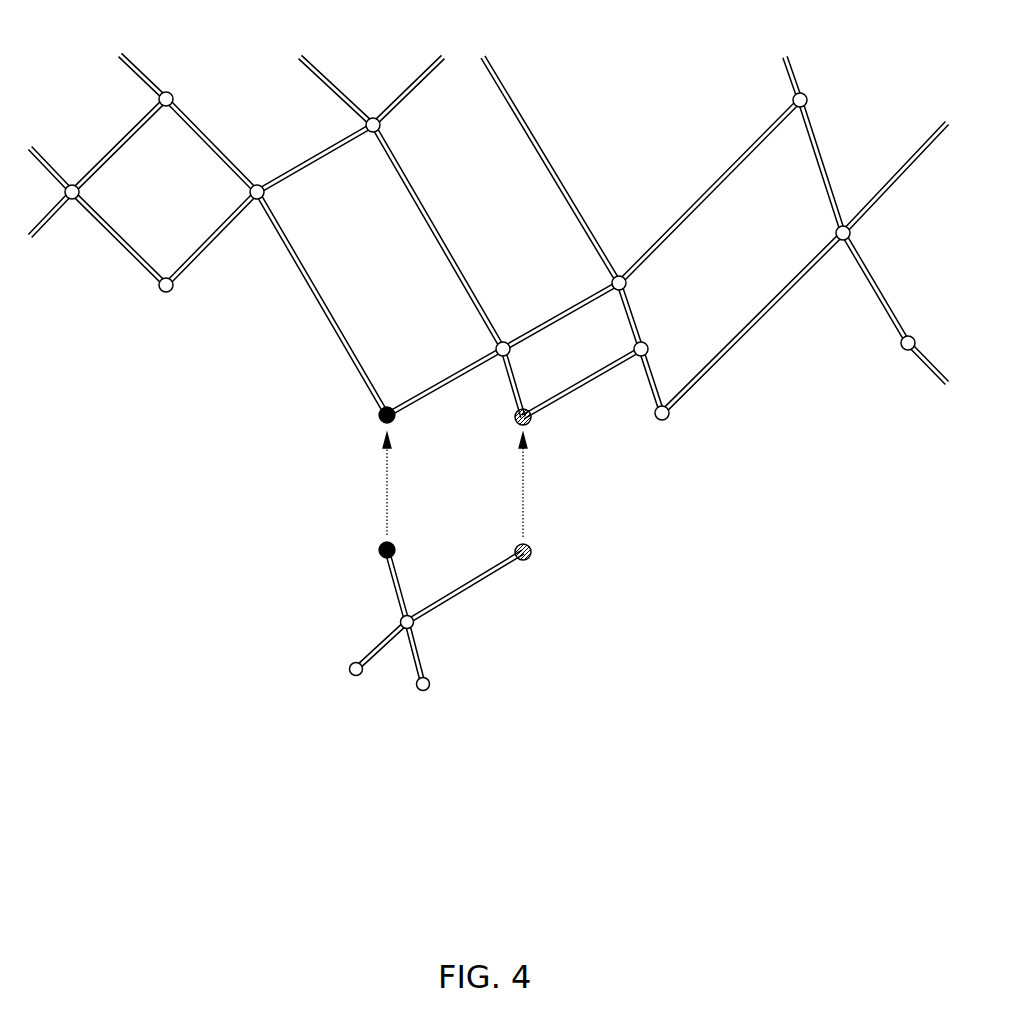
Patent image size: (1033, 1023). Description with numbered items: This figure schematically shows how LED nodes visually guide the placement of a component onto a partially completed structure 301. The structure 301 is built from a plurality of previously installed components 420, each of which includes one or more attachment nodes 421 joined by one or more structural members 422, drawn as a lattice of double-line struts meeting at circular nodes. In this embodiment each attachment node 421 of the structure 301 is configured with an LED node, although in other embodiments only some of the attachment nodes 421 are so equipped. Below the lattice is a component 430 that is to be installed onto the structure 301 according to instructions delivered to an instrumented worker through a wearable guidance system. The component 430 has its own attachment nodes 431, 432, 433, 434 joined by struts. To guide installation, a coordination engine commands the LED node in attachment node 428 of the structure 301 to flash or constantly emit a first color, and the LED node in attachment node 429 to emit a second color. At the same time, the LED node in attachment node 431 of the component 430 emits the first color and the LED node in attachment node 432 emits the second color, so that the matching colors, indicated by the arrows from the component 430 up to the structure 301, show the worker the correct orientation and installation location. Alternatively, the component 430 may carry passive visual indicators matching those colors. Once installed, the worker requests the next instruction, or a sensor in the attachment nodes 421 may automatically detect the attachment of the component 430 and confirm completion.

The structure 301 is at (508, 177).
The previously installed component 420 is at (488, 251).
The attachment node 421 is at (168, 293).
The structural member 422 is at (147, 70).
The attachment node 428 is at (375, 422).
The attachment node 429 is at (530, 424).
The component 430 is at (469, 642).
The attachment node 431 is at (378, 556).
The attachment node 432 is at (532, 557).
The third unit node 433 is at (423, 692).
The fourth unit node 434 is at (356, 676).